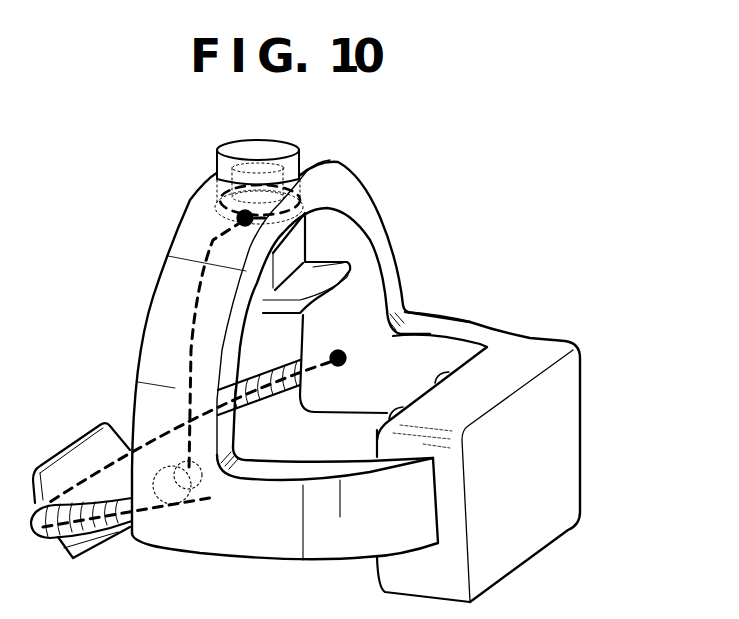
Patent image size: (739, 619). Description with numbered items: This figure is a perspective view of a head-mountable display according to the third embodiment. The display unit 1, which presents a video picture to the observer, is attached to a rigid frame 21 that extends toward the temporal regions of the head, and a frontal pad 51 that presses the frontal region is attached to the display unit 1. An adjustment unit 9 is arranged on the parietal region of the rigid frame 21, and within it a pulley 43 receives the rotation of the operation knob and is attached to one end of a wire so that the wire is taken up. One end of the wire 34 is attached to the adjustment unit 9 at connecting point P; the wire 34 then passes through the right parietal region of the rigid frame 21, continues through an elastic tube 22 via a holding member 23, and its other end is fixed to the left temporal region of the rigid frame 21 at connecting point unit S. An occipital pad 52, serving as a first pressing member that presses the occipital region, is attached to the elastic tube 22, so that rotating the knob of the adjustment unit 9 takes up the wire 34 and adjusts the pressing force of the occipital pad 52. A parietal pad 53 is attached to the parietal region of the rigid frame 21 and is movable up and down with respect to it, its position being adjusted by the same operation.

The display unit 1 is at (503, 550).
The adjustment unit 9 is at (263, 143).
The rigid frame 21 is at (153, 297).
The elastic tube 22 is at (120, 540).
The holding member 23 is at (170, 504).
The wire 34 is at (189, 347).
The pulley 43 is at (222, 182).
The frontal pad 51 is at (432, 373).
The occipital pad 52 is at (62, 458).
The parietal pad 53 is at (322, 267).
The connecting point P is at (237, 220).
The connecting point unit S is at (340, 350).